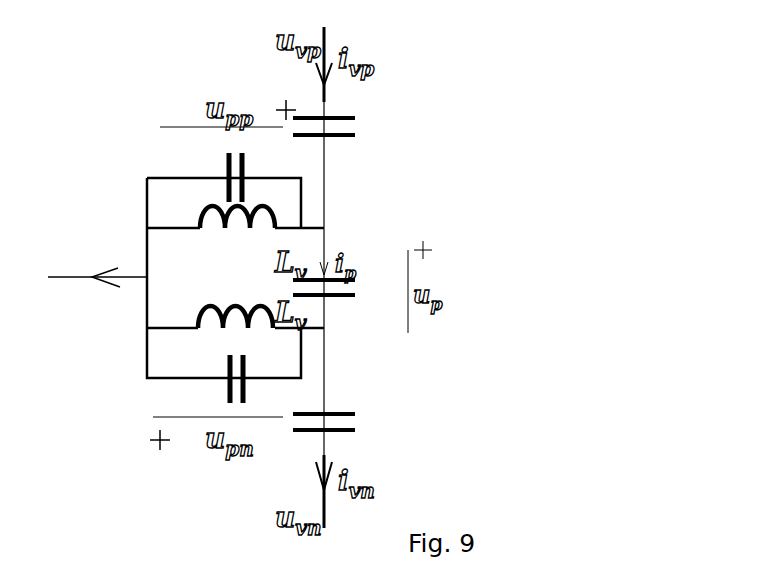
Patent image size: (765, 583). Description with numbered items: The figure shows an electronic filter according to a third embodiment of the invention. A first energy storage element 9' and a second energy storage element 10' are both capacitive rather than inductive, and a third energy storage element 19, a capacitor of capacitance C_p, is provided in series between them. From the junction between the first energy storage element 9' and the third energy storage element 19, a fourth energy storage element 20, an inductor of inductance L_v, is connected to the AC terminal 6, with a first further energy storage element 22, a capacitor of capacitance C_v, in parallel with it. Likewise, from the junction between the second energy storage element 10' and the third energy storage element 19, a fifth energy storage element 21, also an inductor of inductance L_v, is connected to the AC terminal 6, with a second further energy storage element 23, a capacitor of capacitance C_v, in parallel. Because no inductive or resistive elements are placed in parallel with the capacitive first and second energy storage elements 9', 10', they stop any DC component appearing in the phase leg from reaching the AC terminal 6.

The AC terminal 6 is at (72, 277).
The first further energy storage element 22 is at (224, 178).
The fourth energy storage element 20 is at (207, 215).
The fifth energy storage element 21 is at (202, 320).
The second further energy storage element 23 is at (225, 387).
The first energy storage element 9' is at (359, 89).
The third energy storage element 19 is at (355, 272).
The second energy storage element 10' is at (379, 415).